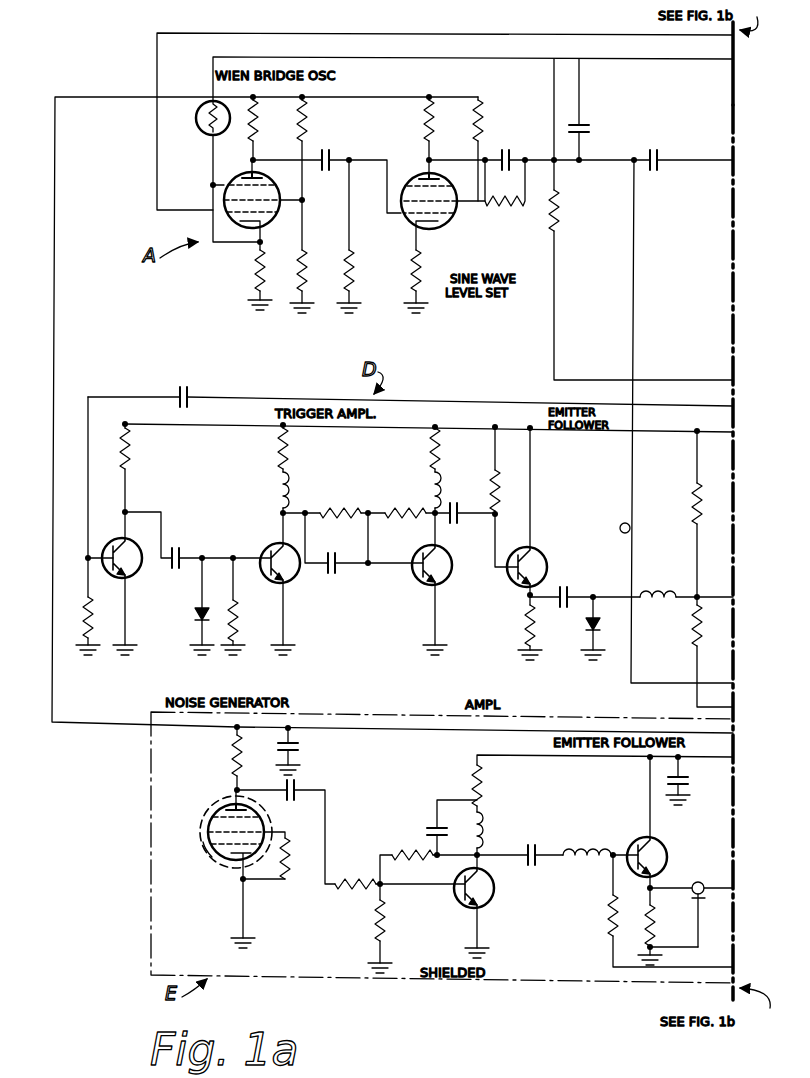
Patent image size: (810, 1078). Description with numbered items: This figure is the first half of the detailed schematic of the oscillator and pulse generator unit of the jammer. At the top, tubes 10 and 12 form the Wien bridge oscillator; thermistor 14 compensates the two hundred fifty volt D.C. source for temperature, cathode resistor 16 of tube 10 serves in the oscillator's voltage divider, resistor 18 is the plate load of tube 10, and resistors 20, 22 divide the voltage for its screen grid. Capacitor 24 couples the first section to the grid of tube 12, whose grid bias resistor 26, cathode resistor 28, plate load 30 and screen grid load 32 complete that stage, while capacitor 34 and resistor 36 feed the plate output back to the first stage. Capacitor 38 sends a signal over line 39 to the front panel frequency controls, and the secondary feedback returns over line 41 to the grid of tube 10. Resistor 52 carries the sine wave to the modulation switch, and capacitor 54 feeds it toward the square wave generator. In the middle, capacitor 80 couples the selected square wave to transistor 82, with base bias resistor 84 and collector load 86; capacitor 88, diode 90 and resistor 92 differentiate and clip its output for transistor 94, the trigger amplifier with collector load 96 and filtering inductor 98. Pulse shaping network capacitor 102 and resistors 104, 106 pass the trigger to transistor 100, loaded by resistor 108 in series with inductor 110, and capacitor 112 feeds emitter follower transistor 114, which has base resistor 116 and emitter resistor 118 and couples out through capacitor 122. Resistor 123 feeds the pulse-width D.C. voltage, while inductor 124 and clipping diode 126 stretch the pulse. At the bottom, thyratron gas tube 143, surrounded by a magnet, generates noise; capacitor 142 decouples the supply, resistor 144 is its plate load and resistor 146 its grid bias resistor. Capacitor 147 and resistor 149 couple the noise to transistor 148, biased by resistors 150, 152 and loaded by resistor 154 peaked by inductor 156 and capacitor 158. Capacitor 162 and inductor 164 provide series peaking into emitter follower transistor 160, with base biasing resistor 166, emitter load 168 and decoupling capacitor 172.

The tube 10 is at (220, 198).
The tube 12 is at (447, 232).
The thermistor 14 is at (196, 124).
The cathode resistor 16 is at (257, 254).
The resistor 18 is at (255, 131).
The resistor 20 is at (306, 123).
The resistor 22 is at (306, 258).
The capacitor 24 is at (332, 155).
The resistor 26 is at (355, 258).
The resistor 28 is at (414, 273).
The resistor 30 is at (426, 128).
The resistor 32 is at (481, 127).
The capacitor 34 is at (508, 155).
The resistor 36 is at (505, 206).
The capacitor 38 is at (590, 129).
The line 39 is at (616, 55).
The line 41 is at (487, 33).
The resistor 52 is at (558, 211).
The capacitor 54 is at (659, 155).
The capacitor 80 is at (185, 385).
The transistor 82 is at (137, 576).
The resistor 84 is at (82, 601).
The resistor 86 is at (130, 452).
The capacitor 88 is at (180, 552).
The diode 90 is at (197, 623).
The resistor 92 is at (235, 612).
The transistor 94 is at (294, 581).
The resistor 96 is at (278, 452).
The inductor 98 is at (290, 491).
The transistor 100 is at (420, 578).
The capacitor 102 is at (344, 555).
The resistor 104 is at (326, 510).
The resistor 106 is at (398, 509).
The resistor 108 is at (441, 455).
The inductor 110 is at (442, 490).
The capacitor 112 is at (453, 518).
The emitter follower transistor 114 is at (512, 583).
The resistor 116 is at (500, 492).
The resistor 118 is at (525, 625).
The capacitor 122 is at (566, 585).
The resistor 123 is at (692, 504).
The inductor 124 is at (660, 592).
The diode 126 is at (586, 622).
The capacitor 142 is at (299, 748).
The thyratron gas tube 143 is at (203, 818).
The resistor 144 is at (233, 758).
The resistor 146 is at (283, 881).
The capacitor 147 is at (296, 793).
The transistor 148 is at (495, 896).
The resistor 149 is at (337, 882).
The resistor 150 is at (389, 852).
The resistor 152 is at (376, 916).
The resistor 154 is at (483, 780).
The inductor 156 is at (484, 838).
The capacitor 158 is at (430, 829).
The emitter follower transistor 160 is at (665, 861).
The capacitor 162 is at (532, 846).
The inductor 164 is at (585, 852).
The resistor 166 is at (608, 916).
The resistor 168 is at (652, 942).
The capacitor 172 is at (690, 786).